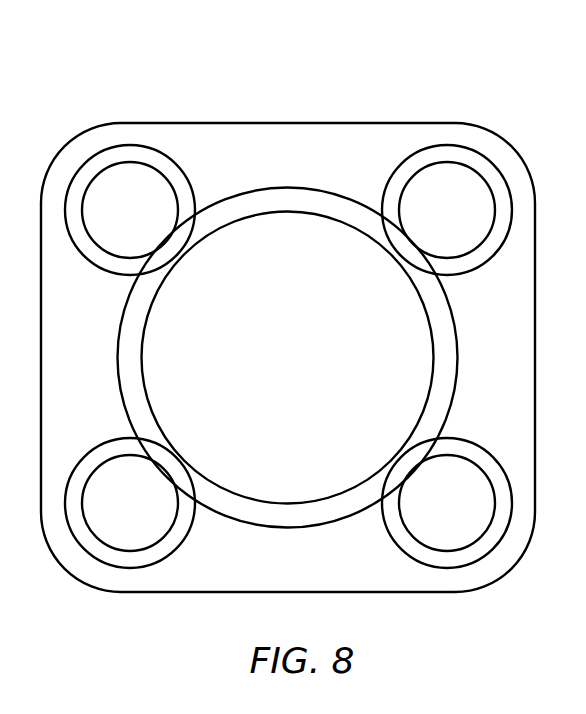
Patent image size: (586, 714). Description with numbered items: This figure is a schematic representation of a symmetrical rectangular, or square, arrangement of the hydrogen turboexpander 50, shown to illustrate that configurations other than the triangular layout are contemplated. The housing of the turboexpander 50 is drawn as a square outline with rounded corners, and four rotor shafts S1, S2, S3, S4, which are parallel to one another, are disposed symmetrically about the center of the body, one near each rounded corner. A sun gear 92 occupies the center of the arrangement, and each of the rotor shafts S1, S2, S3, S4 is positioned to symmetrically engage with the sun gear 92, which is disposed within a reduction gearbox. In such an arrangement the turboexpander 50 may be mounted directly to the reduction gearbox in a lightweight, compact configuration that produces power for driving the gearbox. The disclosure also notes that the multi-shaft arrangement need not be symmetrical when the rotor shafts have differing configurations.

The hydrogen turboexpander 50 is at (468, 70).
The sun gear 92 is at (303, 368).
The rotor shaft S1 is at (130, 210).
The rotor shaft S2 is at (447, 210).
The rotor shaft S3 is at (130, 503).
The rotor shaft S4 is at (447, 503).